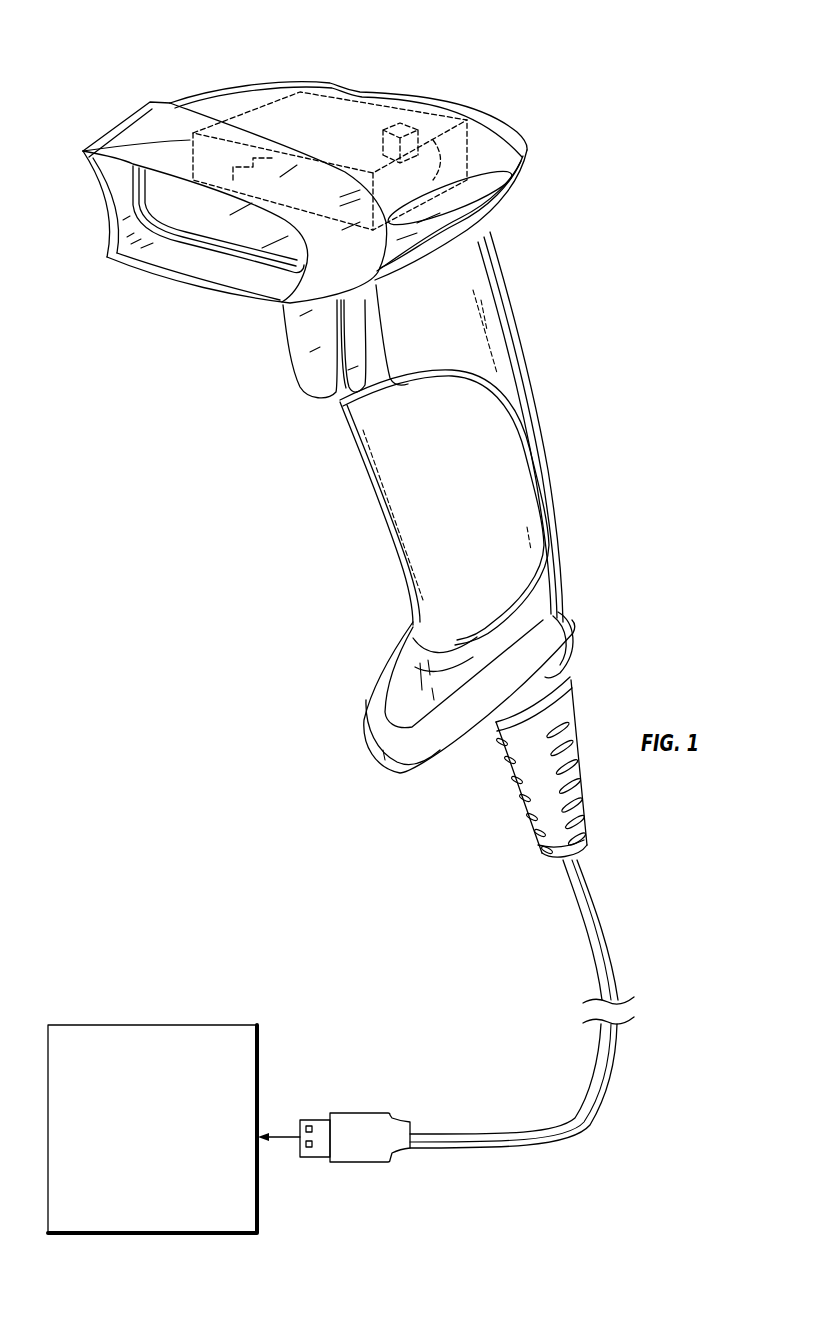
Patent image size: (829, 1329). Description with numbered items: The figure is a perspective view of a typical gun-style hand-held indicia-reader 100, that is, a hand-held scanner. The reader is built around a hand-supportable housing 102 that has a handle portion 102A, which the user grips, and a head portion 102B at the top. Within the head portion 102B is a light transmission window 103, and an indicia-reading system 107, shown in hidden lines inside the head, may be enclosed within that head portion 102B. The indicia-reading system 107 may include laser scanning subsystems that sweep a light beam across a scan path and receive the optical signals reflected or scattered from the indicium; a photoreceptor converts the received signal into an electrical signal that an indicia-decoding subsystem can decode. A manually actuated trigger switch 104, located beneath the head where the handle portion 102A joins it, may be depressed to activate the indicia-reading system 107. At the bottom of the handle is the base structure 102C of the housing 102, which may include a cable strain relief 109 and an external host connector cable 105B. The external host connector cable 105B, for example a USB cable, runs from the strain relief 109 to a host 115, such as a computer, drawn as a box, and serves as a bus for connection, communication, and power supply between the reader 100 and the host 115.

The hand-held indicia-reader 100 is at (522, 96).
The hand-supportable housing 102 is at (580, 430).
The handle portion 102A is at (527, 352).
The head portion 102B is at (252, 98).
The base structure 102C is at (541, 612).
The light transmission window 103 is at (177, 198).
The manually actuated trigger switch 104 is at (301, 358).
The indicia-reading system 107 is at (437, 130).
The cable strain relief 109 is at (520, 803).
The external host connector cable 105B is at (613, 978).
The host 115 is at (137, 1143).